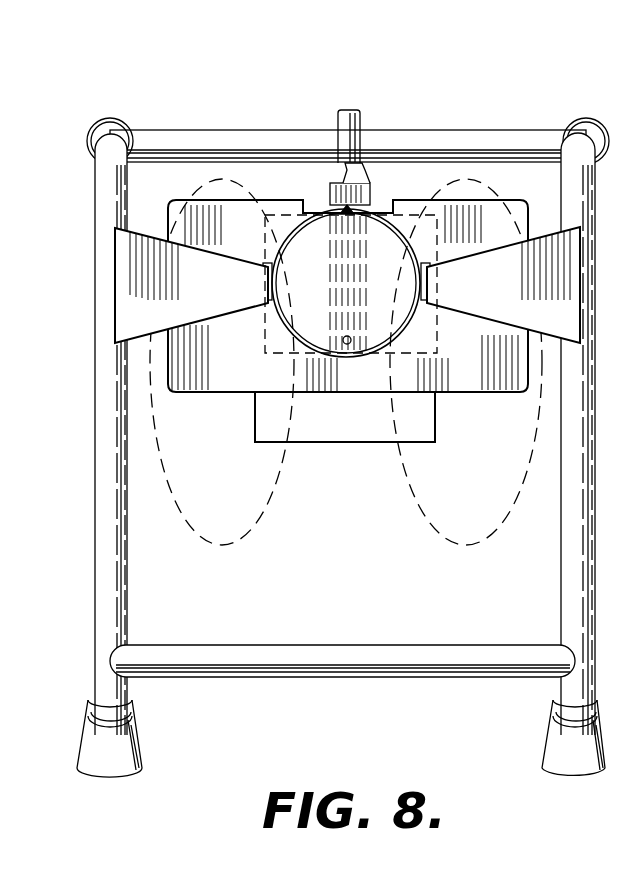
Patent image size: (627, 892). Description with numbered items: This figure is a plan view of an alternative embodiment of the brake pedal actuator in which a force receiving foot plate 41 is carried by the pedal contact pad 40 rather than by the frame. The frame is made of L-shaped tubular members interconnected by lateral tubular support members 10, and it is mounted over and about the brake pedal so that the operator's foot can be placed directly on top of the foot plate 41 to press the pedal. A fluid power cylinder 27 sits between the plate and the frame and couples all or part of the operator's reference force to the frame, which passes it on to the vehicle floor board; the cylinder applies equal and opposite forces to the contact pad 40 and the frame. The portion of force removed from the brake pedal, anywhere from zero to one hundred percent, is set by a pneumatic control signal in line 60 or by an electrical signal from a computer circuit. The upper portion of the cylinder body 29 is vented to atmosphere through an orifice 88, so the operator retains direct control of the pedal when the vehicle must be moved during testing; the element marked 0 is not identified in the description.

The lateral tubular support member 10 is at (190, 138).
The foot plate 41 is at (285, 200).
The mounting plate outline 0 is at (280, 353).
The fluid power cylinder 27 is at (357, 162).
The line 60 is at (338, 118).
The cylinder body 29 is at (352, 211).
The orifice 88 is at (347, 345).
The pedal contact pad 40 is at (258, 443).